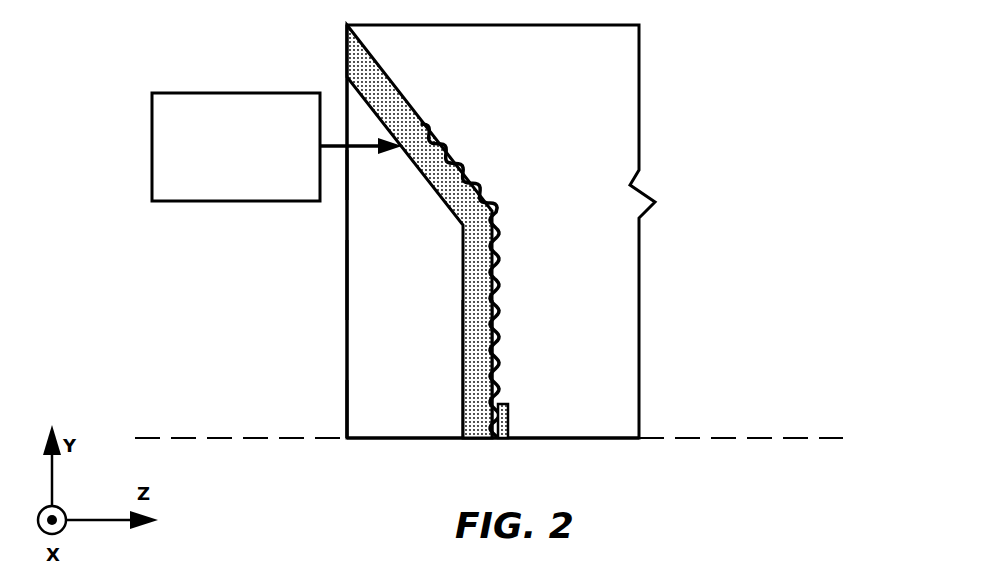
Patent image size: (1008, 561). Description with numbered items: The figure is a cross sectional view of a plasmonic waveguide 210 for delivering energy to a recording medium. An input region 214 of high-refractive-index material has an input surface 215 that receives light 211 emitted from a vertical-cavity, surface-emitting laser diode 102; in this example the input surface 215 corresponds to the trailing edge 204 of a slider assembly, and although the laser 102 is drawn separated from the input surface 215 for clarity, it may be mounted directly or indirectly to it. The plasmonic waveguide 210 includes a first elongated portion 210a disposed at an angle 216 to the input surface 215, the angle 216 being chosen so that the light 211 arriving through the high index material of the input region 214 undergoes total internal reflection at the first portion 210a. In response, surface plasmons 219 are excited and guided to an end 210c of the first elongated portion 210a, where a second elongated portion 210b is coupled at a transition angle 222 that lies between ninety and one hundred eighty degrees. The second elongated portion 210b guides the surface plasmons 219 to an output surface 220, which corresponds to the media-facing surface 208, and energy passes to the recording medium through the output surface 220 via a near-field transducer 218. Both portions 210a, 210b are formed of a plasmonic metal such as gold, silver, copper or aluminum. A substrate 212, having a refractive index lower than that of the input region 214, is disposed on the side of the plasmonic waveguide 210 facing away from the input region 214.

The vertical-cavity surface-emitting laser diode 102 is at (177, 92).
The trailing edge 204 is at (347, 395).
The media-facing surface 208 is at (782, 438).
The plasmonic waveguide 210 is at (473, 231).
The first elongated portion 210a is at (398, 108).
The second elongated portion 210b is at (470, 367).
The end of the first elongated portion 210c is at (510, 280).
The light 211 is at (353, 143).
The substrate 212 is at (618, 57).
The input region 214 is at (372, 262).
The input surface 215 is at (346, 175).
The angle 216 is at (423, 189).
The near-field transducer 218 is at (505, 438).
The surface plasmons 219 is at (499, 222).
The output surface 220 is at (450, 438).
The transition angle 222 is at (440, 210).